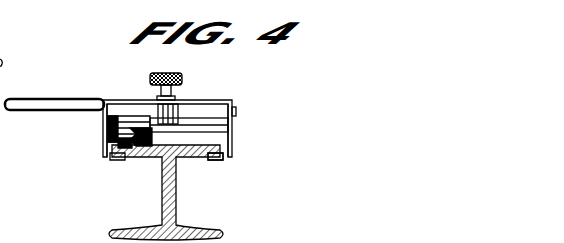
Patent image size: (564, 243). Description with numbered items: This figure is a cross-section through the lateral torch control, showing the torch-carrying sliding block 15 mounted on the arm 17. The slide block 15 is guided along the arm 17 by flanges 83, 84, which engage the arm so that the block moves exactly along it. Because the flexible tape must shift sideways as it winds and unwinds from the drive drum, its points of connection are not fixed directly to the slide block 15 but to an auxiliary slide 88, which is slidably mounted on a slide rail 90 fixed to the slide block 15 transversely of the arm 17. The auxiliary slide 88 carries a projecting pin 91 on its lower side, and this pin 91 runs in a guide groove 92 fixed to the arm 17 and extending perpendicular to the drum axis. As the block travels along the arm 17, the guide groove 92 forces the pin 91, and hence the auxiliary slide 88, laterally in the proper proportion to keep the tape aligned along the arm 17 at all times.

The sliding block 15 is at (232, 129).
The arm 17 is at (176, 201).
The flange 83 is at (112, 158).
The flange 84 is at (222, 160).
The auxiliary slide 88 is at (178, 102).
The slide rail 90 is at (195, 122).
The pin 91 is at (136, 148).
The guide groove 92 is at (156, 150).